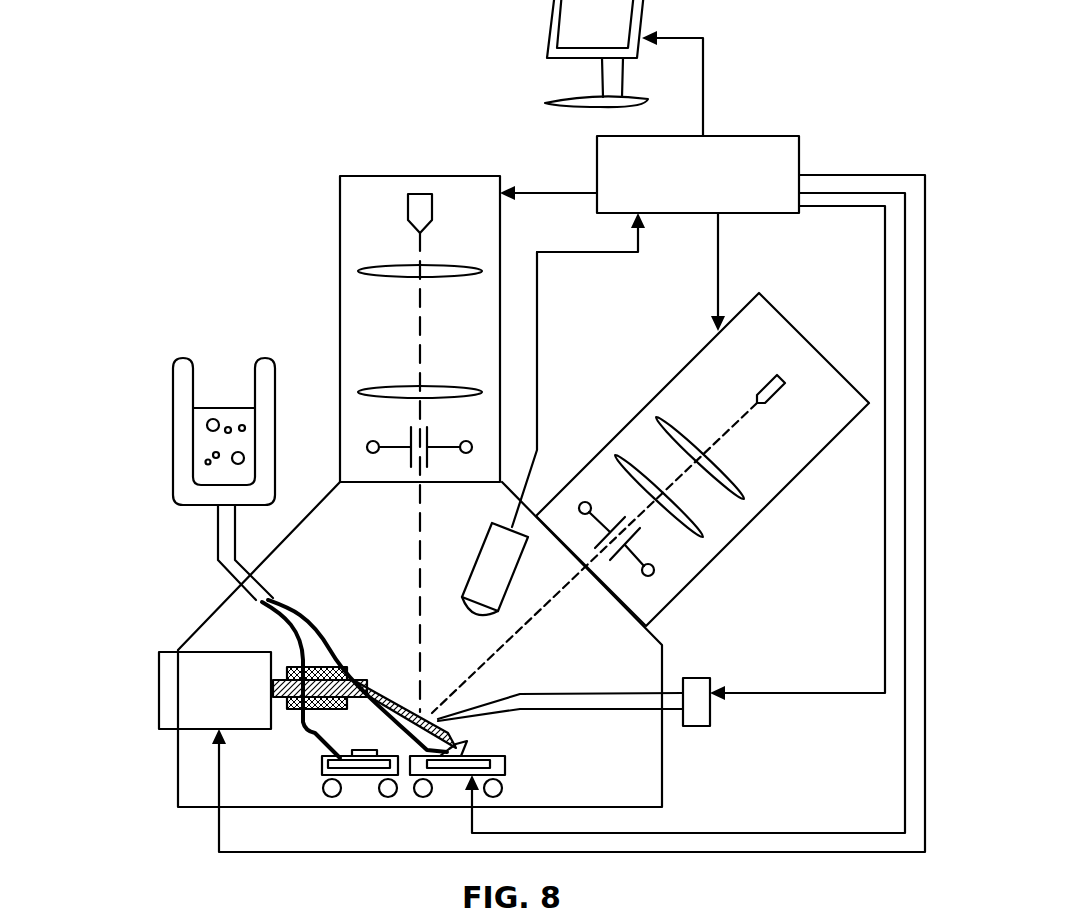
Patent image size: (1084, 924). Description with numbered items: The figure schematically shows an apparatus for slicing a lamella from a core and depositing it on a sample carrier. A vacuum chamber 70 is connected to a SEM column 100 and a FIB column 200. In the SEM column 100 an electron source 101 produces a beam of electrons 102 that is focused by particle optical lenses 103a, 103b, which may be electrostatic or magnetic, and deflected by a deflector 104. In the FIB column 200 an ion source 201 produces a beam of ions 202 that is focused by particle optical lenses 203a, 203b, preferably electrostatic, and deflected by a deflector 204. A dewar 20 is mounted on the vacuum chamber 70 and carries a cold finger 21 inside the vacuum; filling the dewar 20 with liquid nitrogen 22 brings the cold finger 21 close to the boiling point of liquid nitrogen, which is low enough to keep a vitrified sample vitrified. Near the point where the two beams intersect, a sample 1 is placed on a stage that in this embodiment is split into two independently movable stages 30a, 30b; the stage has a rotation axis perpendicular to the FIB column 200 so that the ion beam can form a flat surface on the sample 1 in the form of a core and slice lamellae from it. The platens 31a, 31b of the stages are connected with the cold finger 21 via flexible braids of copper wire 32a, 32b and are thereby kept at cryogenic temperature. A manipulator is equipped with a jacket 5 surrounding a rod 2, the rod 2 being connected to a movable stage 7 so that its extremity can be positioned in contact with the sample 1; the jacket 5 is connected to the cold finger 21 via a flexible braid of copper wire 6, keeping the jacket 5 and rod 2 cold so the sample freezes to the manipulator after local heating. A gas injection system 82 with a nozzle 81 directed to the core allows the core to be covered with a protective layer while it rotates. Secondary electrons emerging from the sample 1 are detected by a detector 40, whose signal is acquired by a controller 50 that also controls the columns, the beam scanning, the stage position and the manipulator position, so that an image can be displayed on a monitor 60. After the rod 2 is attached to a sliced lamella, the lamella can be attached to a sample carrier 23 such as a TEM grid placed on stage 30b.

The sample 1 is at (463, 726).
The rod 2 is at (355, 672).
The jacket 5 is at (220, 688).
The flexible braid of copper wire 6 is at (310, 640).
The movable stage 7 is at (176, 651).
The dewar 20 is at (182, 407).
The cold finger 21 is at (278, 618).
The liquid nitrogen 22 is at (218, 455).
The TEM grid 23 is at (365, 756).
The stage 30a is at (500, 768).
The stage 30b is at (344, 782).
The platen 31a is at (467, 753).
The platen 31b is at (344, 763).
The flexible braid of copper wire 32a is at (310, 587).
The flexible braid of copper wire 32b is at (306, 730).
The detector 40 is at (500, 570).
The controller 50 is at (762, 150).
The monitor 60 is at (573, 40).
The vacuum chamber 70 is at (665, 753).
The nozzle 81 is at (452, 698).
The gas injection system 82 is at (748, 726).
The SEM column 100 is at (318, 211).
The electron source 101 is at (422, 206).
The beam of electrons 102 is at (419, 323).
The particle optical lens 103a is at (400, 272).
The particle optical lens 103b is at (400, 390).
The deflector 104 is at (392, 443).
The FIB column 200 is at (672, 352).
The ion source 201 is at (768, 400).
The beam of ions 202 is at (717, 443).
The particle optical lens 203a is at (724, 490).
The particle optical lens 203b is at (686, 514).
The deflector 204 is at (640, 557).